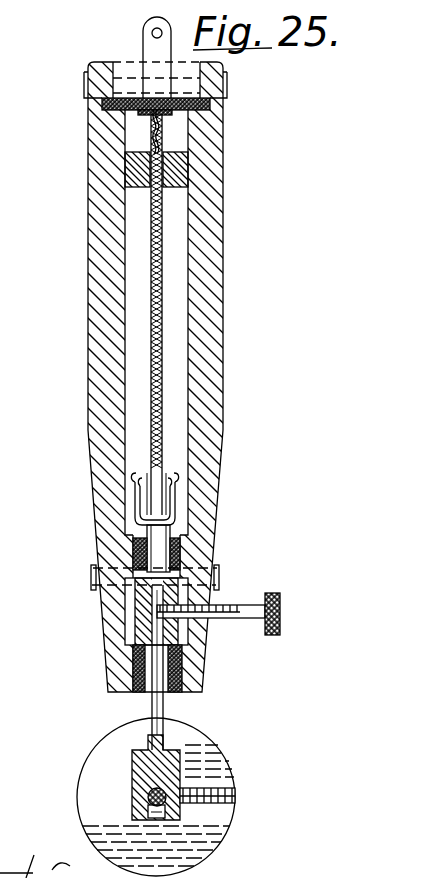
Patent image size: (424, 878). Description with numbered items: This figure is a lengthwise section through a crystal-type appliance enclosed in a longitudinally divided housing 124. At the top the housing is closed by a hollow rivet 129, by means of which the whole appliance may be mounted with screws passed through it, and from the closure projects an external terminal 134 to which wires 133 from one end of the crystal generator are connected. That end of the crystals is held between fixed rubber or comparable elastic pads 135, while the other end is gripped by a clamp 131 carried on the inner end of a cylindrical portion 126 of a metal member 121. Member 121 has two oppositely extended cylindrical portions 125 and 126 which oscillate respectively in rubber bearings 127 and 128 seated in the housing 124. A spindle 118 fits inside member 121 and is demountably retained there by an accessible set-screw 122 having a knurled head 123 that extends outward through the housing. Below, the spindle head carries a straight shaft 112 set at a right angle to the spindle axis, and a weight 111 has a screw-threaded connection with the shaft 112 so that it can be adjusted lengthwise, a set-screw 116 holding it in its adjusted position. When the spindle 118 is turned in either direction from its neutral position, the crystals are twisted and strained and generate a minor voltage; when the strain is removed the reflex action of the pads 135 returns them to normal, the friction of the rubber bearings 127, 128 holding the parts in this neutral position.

The weight 111 is at (203, 748).
The shaft 112 is at (135, 797).
The set-screw 116 is at (298, 785).
The spindle 118 is at (158, 704).
The metal member 121 is at (138, 622).
The set-screw 122 is at (247, 608).
The knurled head 123 is at (271, 636).
The housing 124 is at (207, 417).
The cylindrical portion 125 is at (135, 668).
The cylindrical portion 126 is at (170, 531).
The rubber bearing 127 is at (180, 674).
The rubber bearing 128 is at (108, 582).
The hollow rivet 129 is at (228, 86).
The clamp 131 is at (176, 503).
The wire 133 is at (148, 133).
The external terminal 134 is at (152, 52).
The elastic pad 135 is at (125, 172).